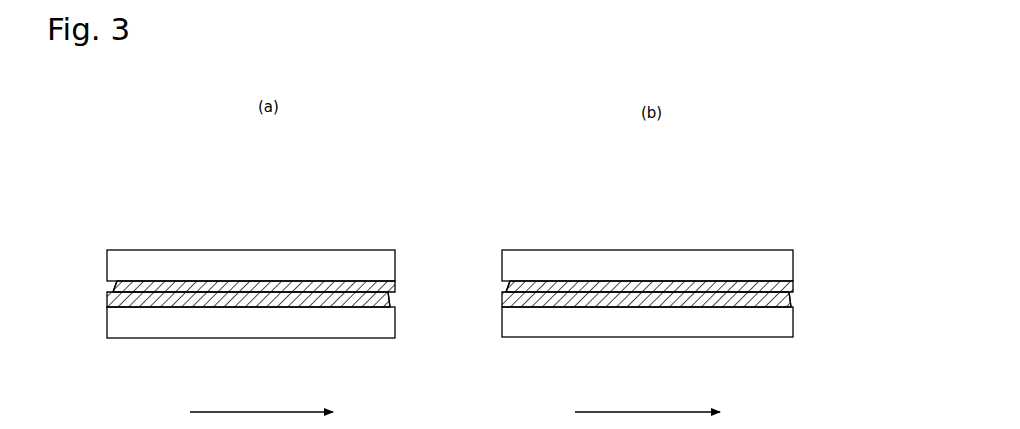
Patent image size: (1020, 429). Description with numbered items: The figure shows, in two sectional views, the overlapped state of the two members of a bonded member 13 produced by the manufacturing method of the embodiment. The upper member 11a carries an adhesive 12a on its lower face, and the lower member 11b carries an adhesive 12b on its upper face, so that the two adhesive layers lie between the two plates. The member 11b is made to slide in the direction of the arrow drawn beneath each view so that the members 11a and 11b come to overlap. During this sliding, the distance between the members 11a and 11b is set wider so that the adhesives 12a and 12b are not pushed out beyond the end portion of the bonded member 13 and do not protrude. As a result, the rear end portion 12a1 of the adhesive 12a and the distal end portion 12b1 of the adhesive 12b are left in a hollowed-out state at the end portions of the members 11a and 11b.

The bonded member 13 is at (178, 230).
The member 11a is at (245, 250).
The member 11b is at (268, 338).
The adhesive 12a is at (375, 290).
The rear end portion 12a1 is at (112, 287).
The adhesive 12b is at (127, 302).
The distal end portion 12b1 is at (396, 298).